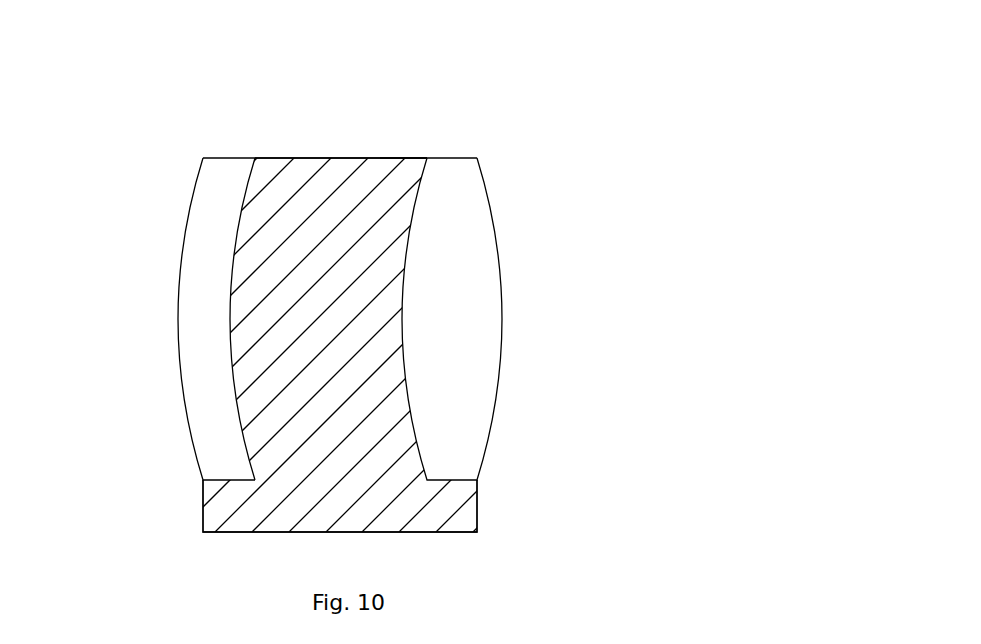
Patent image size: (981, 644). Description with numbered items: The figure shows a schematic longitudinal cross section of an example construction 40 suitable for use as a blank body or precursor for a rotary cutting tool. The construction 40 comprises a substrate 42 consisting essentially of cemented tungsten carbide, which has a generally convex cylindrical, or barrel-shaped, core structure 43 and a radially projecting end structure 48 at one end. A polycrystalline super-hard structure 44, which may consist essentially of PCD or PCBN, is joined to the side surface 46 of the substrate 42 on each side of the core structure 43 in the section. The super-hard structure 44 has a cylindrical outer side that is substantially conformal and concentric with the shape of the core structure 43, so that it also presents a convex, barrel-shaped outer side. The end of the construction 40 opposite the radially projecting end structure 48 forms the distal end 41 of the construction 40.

The construction 40 is at (546, 112).
The distal end 41 is at (341, 158).
The substrate 42 is at (397, 208).
The core structure 43 is at (370, 311).
The super-hard structure 44 is at (212, 203).
The side surface 46 is at (230, 352).
The radially projecting end structure 48 is at (477, 504).